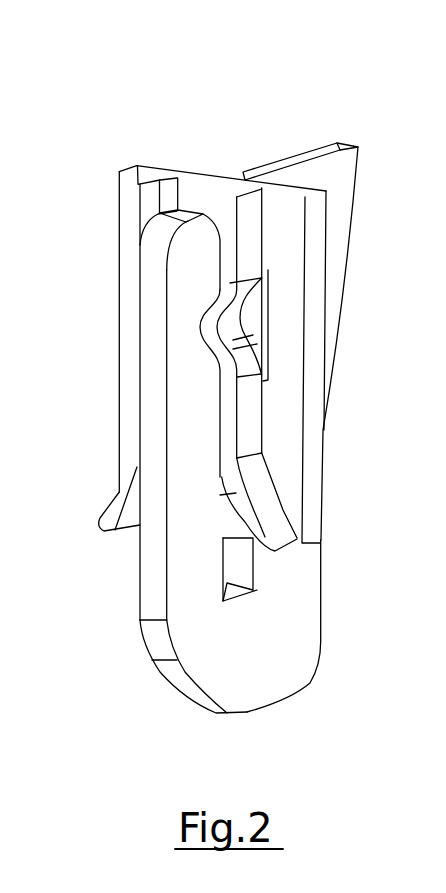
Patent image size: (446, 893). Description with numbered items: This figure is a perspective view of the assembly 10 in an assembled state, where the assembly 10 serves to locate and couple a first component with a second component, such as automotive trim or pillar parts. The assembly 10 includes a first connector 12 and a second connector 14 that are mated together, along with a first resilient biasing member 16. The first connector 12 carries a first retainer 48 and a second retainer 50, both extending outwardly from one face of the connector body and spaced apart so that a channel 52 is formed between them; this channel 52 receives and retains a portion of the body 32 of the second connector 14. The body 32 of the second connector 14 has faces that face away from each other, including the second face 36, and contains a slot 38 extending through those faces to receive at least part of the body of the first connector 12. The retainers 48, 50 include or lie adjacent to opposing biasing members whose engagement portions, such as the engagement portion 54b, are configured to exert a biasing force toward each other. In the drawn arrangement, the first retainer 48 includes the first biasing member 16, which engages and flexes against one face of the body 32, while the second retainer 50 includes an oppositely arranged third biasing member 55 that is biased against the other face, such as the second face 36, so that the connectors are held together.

The assembly 10 is at (183, 94).
The first connector 12 is at (119, 212).
The second connector 14 is at (137, 592).
The first resilient biasing member 16 is at (123, 348).
The body 32 is at (153, 538).
The second face 36 is at (263, 650).
The slot 38 is at (244, 567).
The first retainer 48 is at (130, 274).
The second retainer 50 is at (247, 238).
The channel 52 is at (207, 195).
The engagement portion 54b is at (130, 313).
The third biasing member 55 is at (254, 322).